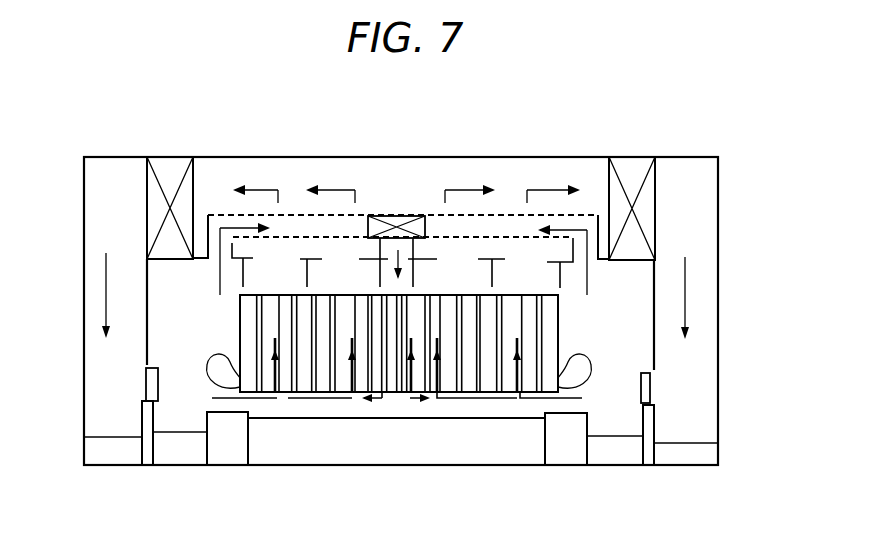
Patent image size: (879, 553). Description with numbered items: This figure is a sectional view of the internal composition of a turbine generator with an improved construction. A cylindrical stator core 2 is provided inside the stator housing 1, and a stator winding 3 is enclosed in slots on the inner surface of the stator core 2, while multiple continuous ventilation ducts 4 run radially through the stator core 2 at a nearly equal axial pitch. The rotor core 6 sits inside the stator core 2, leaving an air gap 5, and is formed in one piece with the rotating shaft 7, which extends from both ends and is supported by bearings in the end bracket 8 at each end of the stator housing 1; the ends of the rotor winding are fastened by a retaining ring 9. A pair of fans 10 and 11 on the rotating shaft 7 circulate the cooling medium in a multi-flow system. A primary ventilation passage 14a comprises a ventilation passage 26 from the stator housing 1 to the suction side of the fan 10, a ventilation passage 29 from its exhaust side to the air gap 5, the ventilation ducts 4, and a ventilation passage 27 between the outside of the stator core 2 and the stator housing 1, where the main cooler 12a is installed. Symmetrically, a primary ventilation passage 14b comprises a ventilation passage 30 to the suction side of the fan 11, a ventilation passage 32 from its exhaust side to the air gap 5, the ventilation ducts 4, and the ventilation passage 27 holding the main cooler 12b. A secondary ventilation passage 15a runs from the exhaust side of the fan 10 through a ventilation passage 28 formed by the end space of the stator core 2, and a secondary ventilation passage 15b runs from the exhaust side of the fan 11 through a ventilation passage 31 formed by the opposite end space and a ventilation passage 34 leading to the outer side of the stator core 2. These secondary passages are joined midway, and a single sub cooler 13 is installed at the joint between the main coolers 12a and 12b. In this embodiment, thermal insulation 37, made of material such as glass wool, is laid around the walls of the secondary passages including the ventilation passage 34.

The stator housing 1 is at (333, 175).
The stator core 2 is at (302, 248).
The stator winding 3 is at (652, 208).
The ventilation ducts 4 is at (278, 321).
The air gap 5 is at (300, 407).
The rotor core 6 is at (340, 450).
The rotating shaft 7 is at (115, 447).
The end bracket 8 is at (85, 160).
The retaining ring 9 is at (228, 450).
The fan 10 is at (428, 212).
The fan 11 is at (650, 395).
The main cooler 12a is at (170, 165).
The main cooler 12b is at (632, 175).
The sub cooler 13 is at (388, 212).
The primary ventilation passage 14a is at (94, 250).
The primary ventilation passage 14b is at (683, 223).
The secondary ventilation passage 15a is at (163, 307).
The secondary ventilation passage 15b is at (628, 288).
The ventilation passage 26 is at (97, 418).
The ventilation passage 27 is at (268, 172).
The ventilation passage 28 is at (160, 325).
The ventilation passage 29 is at (186, 407).
The ventilation passage 30 is at (693, 378).
The ventilation passage 31 is at (623, 320).
The ventilation passage 32 is at (622, 415).
The ventilation passage 34 is at (490, 218).
The thermal insulation 37 is at (505, 212).